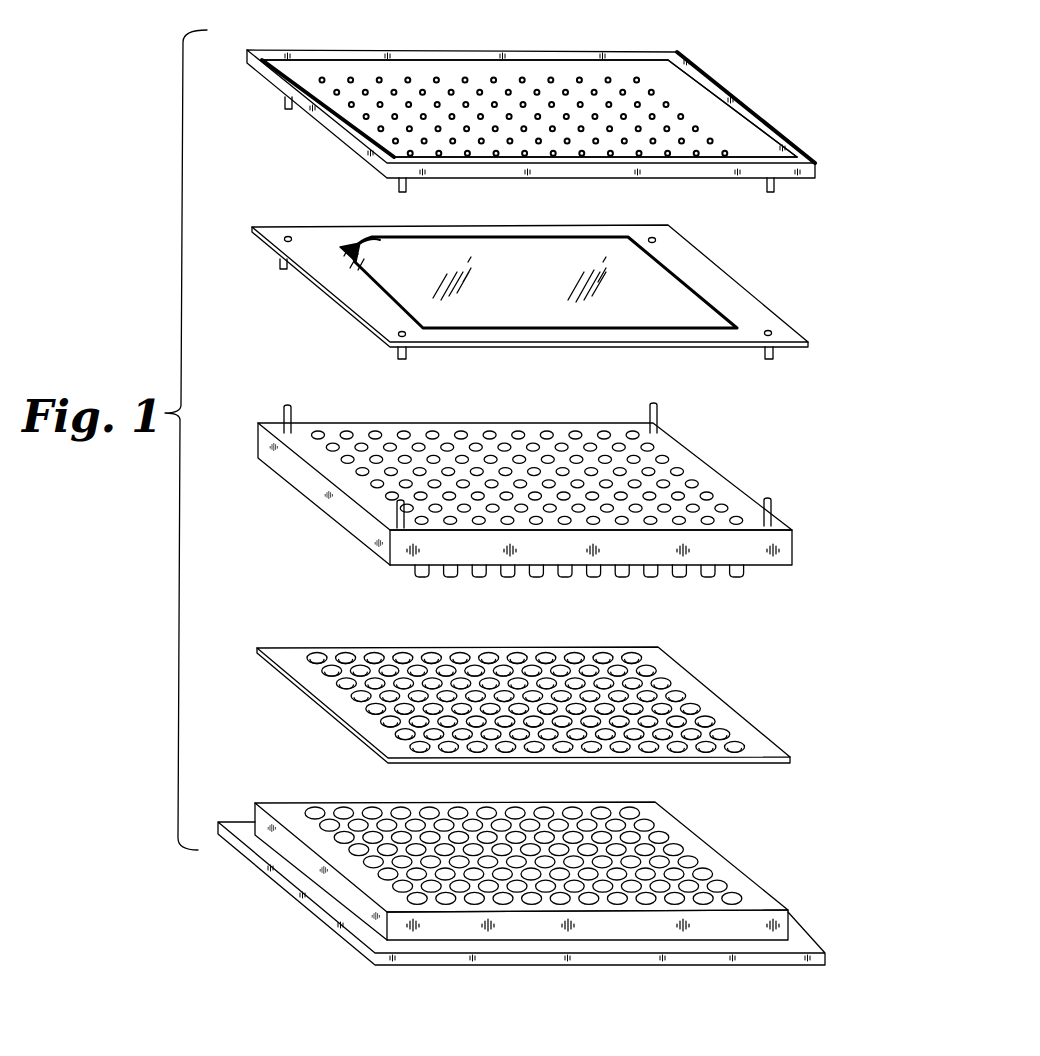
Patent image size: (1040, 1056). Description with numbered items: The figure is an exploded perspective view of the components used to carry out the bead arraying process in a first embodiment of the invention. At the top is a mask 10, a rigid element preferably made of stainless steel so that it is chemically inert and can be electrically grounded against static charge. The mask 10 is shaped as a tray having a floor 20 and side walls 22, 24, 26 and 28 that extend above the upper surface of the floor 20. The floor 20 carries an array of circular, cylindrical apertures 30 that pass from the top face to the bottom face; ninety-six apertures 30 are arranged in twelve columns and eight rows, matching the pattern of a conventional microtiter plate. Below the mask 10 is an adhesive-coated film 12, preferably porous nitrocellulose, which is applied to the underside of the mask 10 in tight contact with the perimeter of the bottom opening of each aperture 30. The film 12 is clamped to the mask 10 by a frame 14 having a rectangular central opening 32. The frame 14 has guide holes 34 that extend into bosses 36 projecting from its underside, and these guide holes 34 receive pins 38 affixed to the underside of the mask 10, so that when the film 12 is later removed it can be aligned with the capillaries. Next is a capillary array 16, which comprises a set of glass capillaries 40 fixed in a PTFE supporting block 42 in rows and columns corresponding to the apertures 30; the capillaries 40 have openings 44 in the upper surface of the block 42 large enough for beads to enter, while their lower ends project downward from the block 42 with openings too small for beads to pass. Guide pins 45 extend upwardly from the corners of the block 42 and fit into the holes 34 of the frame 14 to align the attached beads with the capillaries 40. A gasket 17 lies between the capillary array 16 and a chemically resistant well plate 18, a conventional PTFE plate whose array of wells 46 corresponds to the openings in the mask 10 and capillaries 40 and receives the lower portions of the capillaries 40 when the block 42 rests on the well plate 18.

The mask 10 is at (718, 64).
The adhesive-coated film 12 is at (675, 283).
The frame 14 is at (745, 297).
The capillary array 16 is at (723, 468).
The gasket 17 is at (718, 695).
The chemically resistant well plate 18 is at (733, 852).
The floor 20 is at (662, 72).
The side wall 22 is at (452, 62).
The side wall 24 is at (333, 128).
The side wall 26 is at (503, 178).
The side wall 28 is at (765, 118).
The apertures 30 is at (613, 153).
The rectangular central opening 32 is at (353, 243).
The guide holes 34 is at (290, 236).
The bosses 36 is at (283, 266).
The pins 38 is at (285, 103).
The glass capillaries 40 is at (622, 580).
The supporting block 42 is at (312, 496).
The openings 44 is at (465, 437).
The guide pins 45 is at (295, 418).
The wells 46 is at (565, 900).